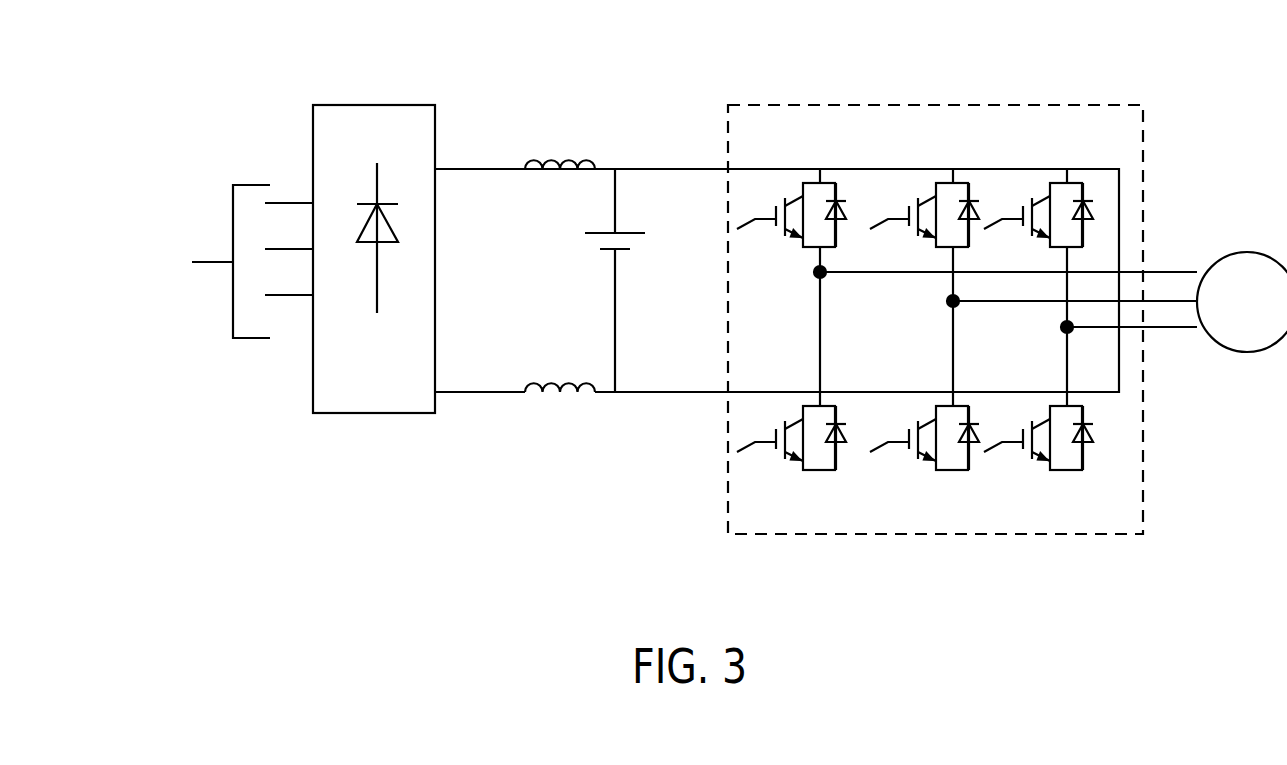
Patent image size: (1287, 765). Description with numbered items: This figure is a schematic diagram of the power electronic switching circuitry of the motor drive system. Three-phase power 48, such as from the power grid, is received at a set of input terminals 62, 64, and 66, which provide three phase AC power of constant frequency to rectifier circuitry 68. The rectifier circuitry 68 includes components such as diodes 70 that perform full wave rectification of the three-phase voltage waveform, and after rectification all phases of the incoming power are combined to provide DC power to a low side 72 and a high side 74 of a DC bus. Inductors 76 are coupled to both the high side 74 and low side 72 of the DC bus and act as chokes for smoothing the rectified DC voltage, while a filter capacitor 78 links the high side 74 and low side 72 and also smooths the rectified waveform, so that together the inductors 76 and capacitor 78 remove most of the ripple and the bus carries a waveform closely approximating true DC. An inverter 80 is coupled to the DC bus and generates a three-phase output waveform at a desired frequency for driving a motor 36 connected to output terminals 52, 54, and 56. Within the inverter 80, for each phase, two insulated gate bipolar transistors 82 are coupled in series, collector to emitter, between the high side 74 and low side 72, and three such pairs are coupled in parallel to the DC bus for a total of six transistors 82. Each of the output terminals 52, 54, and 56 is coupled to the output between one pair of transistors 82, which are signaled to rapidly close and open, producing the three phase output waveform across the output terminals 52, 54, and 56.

The motor 36 is at (1245, 252).
The three-phase power 48 is at (231, 198).
The output terminal 52 is at (1157, 271).
The output terminal 54 is at (1148, 302).
The output terminal 56 is at (1190, 328).
The input terminal 62 is at (290, 202).
The input terminal 64 is at (290, 250).
The input terminal 66 is at (298, 297).
The rectifier circuitry 68 is at (374, 104).
The diode 70 is at (379, 200).
The low side of DC bus 72 is at (469, 381).
The high side of DC bus 74 is at (517, 168).
The inductor 76 is at (589, 160).
The filter capacitor 78 is at (607, 250).
The inverter 80 is at (1083, 104).
The insulated gate bipolar transistor 82 is at (1072, 169).